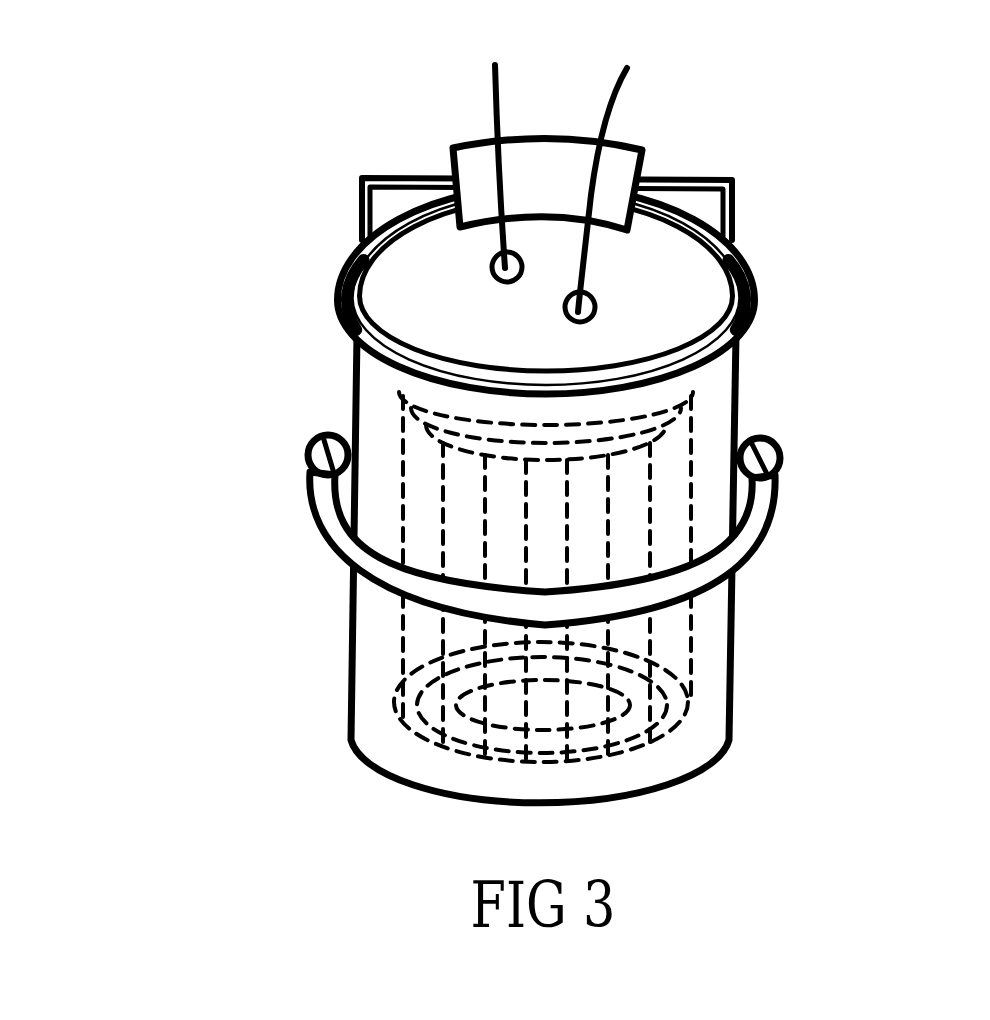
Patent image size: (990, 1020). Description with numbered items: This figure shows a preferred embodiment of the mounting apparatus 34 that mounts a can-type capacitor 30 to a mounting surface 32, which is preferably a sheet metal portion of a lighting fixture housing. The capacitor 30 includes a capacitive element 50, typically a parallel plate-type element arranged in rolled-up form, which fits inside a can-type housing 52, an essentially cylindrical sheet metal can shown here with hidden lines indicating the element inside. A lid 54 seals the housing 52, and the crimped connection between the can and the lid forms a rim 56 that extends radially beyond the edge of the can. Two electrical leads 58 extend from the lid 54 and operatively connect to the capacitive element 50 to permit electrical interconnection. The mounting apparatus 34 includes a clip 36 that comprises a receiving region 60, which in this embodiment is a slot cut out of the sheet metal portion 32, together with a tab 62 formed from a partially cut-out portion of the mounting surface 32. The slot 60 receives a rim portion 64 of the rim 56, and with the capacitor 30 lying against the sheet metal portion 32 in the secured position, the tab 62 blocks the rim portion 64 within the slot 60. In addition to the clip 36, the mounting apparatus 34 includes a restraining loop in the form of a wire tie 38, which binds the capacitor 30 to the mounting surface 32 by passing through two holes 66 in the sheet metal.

The capacitor 30 is at (544, 569).
The mounting surface 32 is at (551, 434).
The mounting apparatus 34 is at (435, 267).
The clip 36 is at (592, 188).
The wire tie 38 is at (735, 553).
The capacitive element 50 is at (395, 632).
The can-type housing 52 is at (352, 705).
The lid 54 is at (392, 311).
The rim 56 is at (342, 265).
The electrical leads 58 is at (493, 75).
The receiving region 60 is at (362, 196).
The tab 62 is at (483, 167).
The rim portion 64 is at (647, 231).
The holes 66 is at (303, 453).